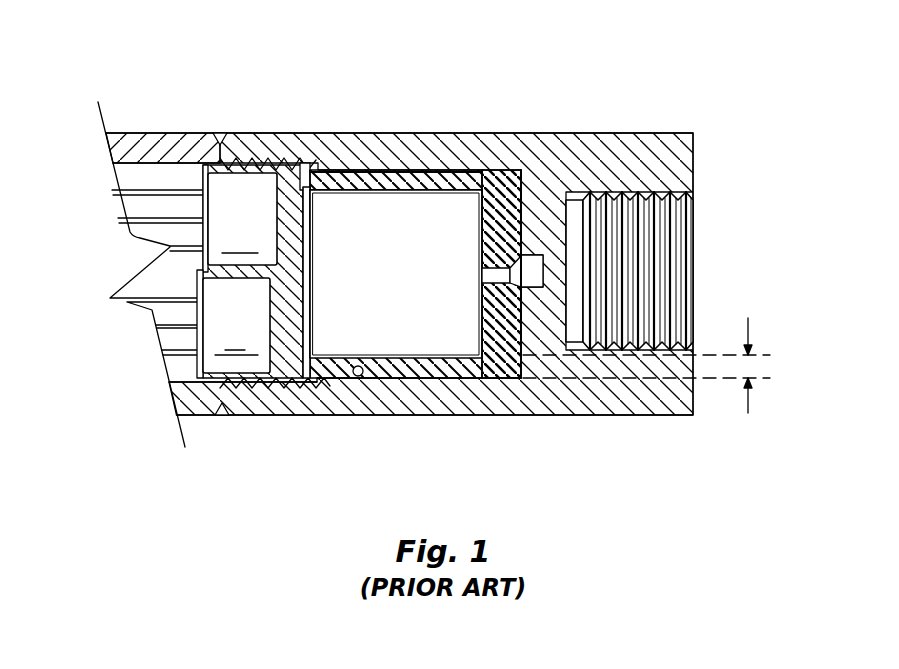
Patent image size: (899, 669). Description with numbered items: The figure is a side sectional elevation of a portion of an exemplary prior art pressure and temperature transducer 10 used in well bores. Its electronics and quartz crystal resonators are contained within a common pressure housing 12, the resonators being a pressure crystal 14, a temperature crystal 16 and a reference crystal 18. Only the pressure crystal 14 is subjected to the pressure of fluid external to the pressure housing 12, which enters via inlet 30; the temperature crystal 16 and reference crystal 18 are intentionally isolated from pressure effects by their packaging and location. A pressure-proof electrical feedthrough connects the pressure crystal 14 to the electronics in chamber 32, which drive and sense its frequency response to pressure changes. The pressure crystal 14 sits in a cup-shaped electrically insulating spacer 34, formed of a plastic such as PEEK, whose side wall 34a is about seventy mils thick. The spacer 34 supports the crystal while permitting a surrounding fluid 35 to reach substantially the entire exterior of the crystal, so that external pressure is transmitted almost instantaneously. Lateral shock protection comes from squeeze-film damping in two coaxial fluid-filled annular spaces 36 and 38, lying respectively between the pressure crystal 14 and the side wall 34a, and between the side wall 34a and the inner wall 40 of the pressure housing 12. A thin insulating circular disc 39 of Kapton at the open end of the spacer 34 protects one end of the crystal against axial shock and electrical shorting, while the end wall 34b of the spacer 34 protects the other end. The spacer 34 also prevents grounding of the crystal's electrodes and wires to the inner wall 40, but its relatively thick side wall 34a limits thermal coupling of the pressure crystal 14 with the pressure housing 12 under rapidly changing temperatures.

The transducer 10 is at (637, 60).
The pressure housing 12 is at (636, 415).
The pressure crystal 14 is at (455, 378).
The temperature crystal 16 is at (228, 195).
The reference crystal 18 is at (232, 335).
The inlet 30 is at (533, 270).
The chamber 32 is at (147, 182).
The electrically insulating spacer 34 is at (432, 333).
The spacer side wall 34a is at (418, 175).
The spacer end wall 34b is at (522, 210).
The fluid 35 is at (333, 173).
The first annular space 36 is at (478, 187).
The second annular space 38 is at (453, 173).
The circular disc 39 is at (307, 162).
The inner wall 40 is at (358, 377).